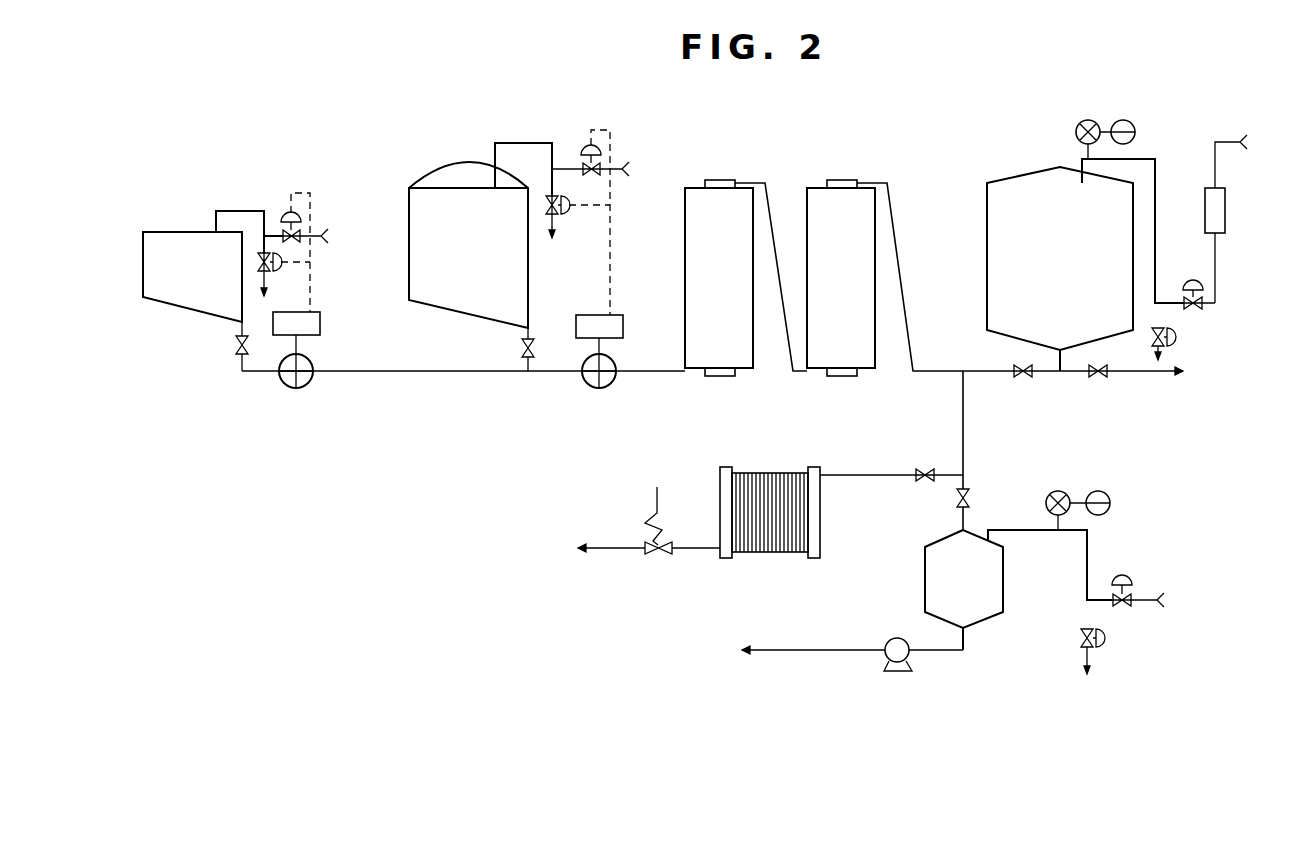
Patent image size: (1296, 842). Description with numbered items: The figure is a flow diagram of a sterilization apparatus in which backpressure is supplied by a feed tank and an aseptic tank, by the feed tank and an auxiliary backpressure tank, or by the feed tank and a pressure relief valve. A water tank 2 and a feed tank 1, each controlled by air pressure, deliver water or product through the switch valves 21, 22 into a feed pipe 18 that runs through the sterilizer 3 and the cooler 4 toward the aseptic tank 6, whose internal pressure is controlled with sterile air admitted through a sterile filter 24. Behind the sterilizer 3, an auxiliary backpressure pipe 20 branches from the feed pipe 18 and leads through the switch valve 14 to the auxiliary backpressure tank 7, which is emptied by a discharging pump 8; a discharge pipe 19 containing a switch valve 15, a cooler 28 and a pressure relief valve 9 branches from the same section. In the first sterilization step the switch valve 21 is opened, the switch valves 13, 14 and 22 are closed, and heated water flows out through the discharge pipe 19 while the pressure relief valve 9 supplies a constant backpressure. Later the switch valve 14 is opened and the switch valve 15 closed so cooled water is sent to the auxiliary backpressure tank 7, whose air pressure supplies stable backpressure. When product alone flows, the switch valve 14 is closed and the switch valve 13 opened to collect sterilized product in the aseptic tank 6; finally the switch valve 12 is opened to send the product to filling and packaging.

The feed tank 1 is at (447, 163).
The water tank 2 is at (184, 232).
The sterilizer 3 is at (697, 184).
The cooler 4 is at (817, 184).
The aseptic tank 6 is at (1013, 176).
The auxiliary backpressure tank 7 is at (925, 580).
The discharging pump 8 is at (888, 663).
The pressure relief valve 9 is at (655, 556).
The switch valve 12 is at (1100, 380).
The switch valve 13 is at (1022, 380).
The switch valve 14 is at (960, 500).
The switch valve 15 is at (925, 470).
The feed pipe 18 is at (946, 366).
The discharge pipe 19 is at (863, 474).
The auxiliary backpressure pipe 20 is at (966, 448).
The switch valve 21 is at (235, 345).
The switch valve 22 is at (523, 348).
The sterile filter 24 is at (1226, 210).
The cooler 28 is at (772, 473).